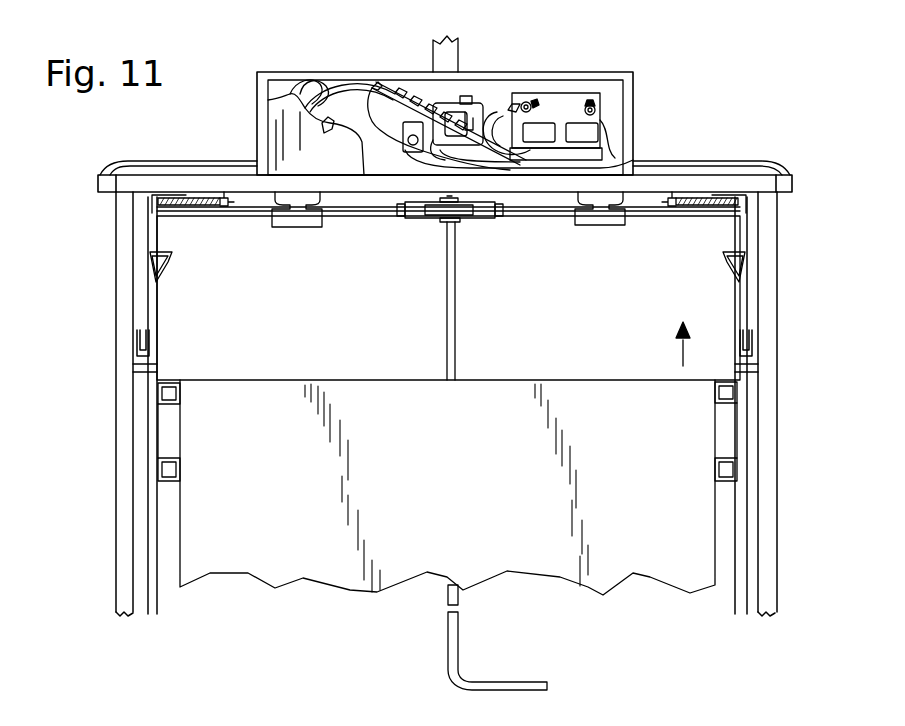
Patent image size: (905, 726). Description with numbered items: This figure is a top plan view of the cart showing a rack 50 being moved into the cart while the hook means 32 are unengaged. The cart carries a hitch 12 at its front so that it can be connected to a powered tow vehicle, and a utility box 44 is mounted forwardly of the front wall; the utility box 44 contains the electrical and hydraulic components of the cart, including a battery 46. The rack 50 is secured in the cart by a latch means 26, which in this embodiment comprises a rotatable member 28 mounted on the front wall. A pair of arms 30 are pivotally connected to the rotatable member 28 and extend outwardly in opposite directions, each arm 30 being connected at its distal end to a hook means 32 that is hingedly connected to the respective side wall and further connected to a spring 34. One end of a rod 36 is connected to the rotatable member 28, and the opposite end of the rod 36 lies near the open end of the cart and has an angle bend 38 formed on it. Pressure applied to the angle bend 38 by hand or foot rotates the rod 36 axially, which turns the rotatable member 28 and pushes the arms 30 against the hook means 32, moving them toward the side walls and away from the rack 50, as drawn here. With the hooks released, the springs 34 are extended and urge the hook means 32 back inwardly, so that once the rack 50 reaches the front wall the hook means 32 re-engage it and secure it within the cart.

The hitch 12 is at (432, 57).
The latch means 26 is at (428, 232).
The rotatable member 28 is at (468, 228).
The arms 30 is at (256, 208).
The hook means 32 is at (168, 254).
The spring 34 is at (206, 197).
The rod 36 is at (446, 593).
The angle bend 38 is at (492, 682).
The utility box 44 is at (439, 96).
The battery 46 is at (558, 100).
The rack 50 is at (675, 592).